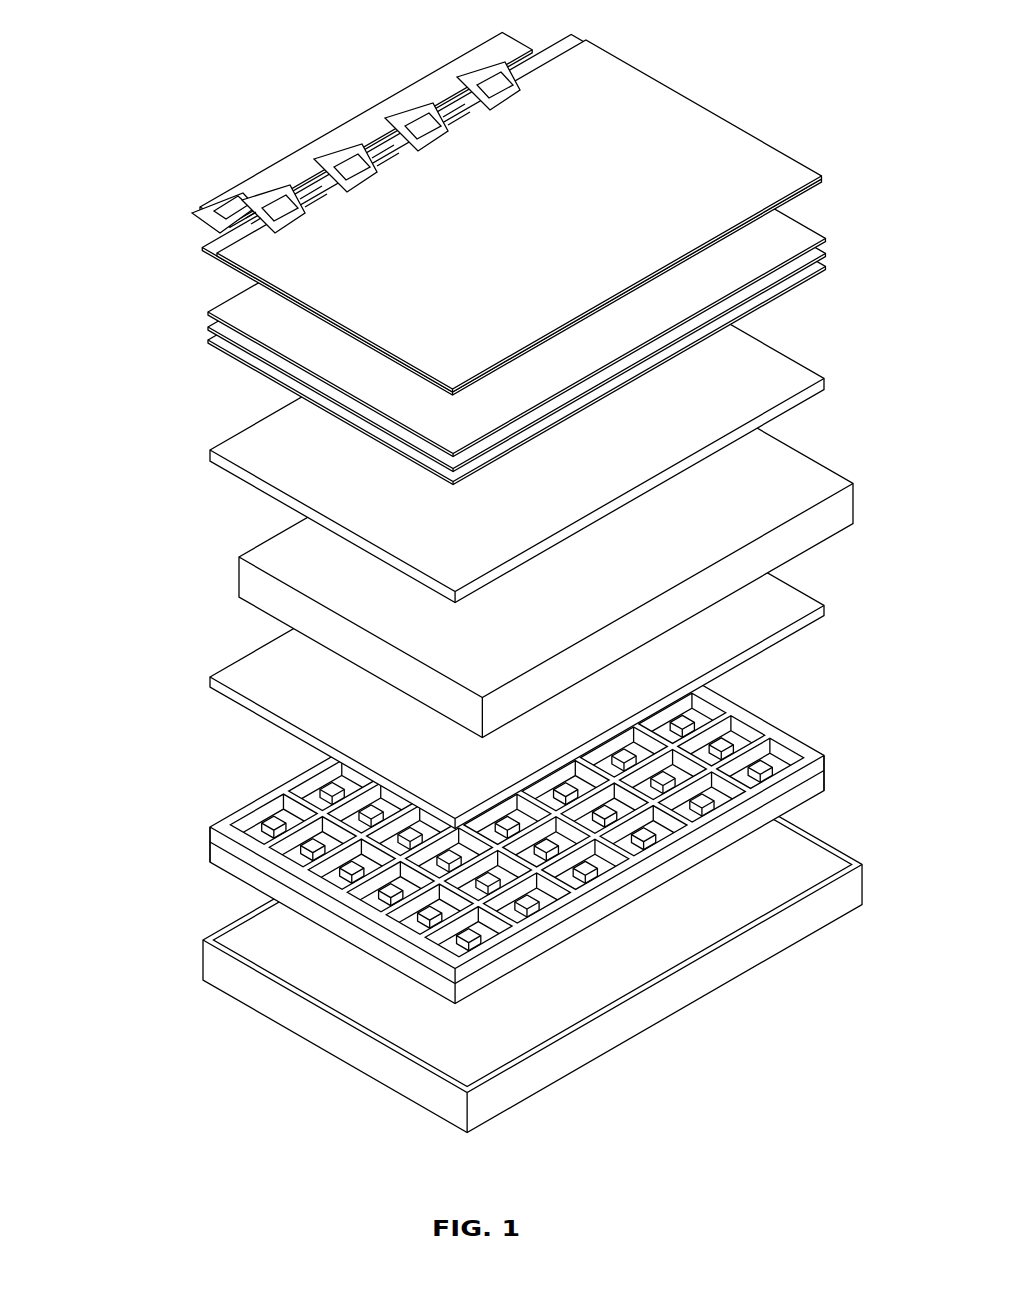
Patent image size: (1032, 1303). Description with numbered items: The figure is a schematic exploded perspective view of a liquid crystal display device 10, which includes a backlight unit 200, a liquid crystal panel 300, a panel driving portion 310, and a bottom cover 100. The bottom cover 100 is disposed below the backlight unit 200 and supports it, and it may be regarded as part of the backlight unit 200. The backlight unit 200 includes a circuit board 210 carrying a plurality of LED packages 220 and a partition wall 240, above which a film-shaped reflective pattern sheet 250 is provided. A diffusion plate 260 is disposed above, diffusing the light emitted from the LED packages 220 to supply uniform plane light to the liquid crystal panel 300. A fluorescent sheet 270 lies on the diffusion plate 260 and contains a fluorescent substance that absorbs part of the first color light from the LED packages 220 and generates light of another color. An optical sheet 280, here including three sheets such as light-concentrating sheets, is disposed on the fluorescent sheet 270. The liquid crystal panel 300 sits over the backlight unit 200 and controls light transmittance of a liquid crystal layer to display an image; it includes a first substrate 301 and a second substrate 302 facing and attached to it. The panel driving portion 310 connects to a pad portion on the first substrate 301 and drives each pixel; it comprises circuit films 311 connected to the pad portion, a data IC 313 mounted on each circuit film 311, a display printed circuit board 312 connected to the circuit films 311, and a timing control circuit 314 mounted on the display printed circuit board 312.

The liquid crystal display device 10 is at (476, 593).
The bottom cover 100 is at (842, 846).
The backlight unit 200 is at (527, 550).
The circuit board 210 is at (818, 784).
The LED packages 220 is at (722, 740).
The partition wall 240 is at (812, 754).
The reflective pattern sheet 250 is at (798, 607).
The diffusion plate 260 is at (798, 480).
The fluorescent sheet 270 is at (798, 377).
The optical sheet 280 is at (840, 232).
The liquid crystal panel 300 is at (567, 215).
The first substrate 301 is at (818, 182).
The second substrate 302 is at (816, 172).
The panel driving portion 310 is at (276, 163).
The circuit films 311 is at (252, 236).
The display printed circuit board 312 is at (225, 196).
The data IC 313 is at (268, 229).
The timing control circuit 314 is at (257, 214).